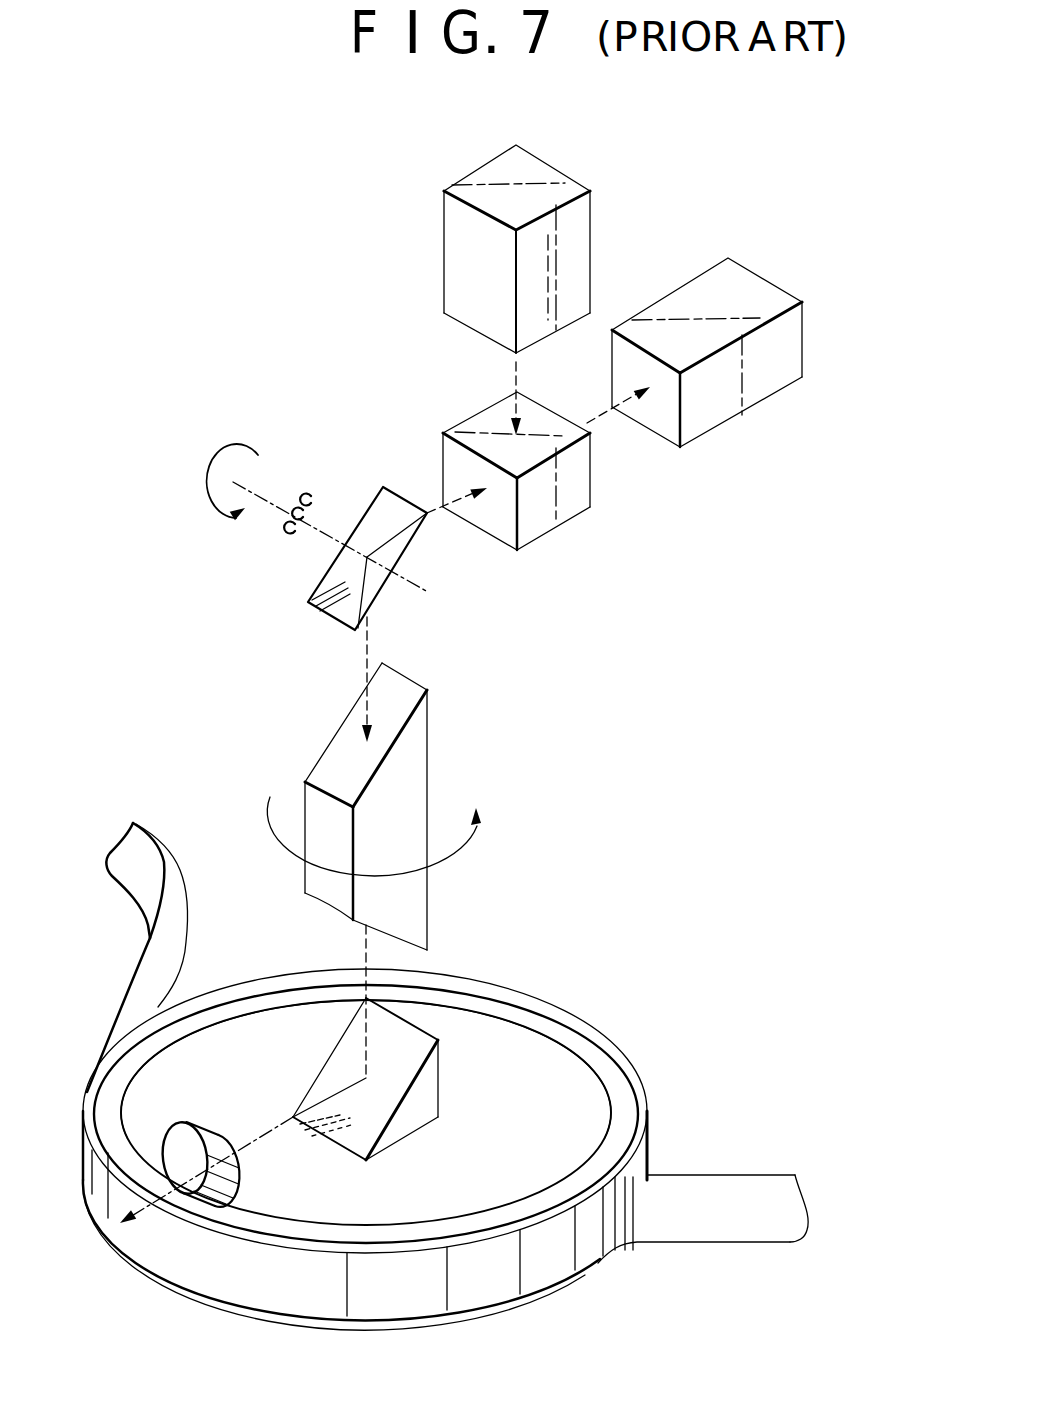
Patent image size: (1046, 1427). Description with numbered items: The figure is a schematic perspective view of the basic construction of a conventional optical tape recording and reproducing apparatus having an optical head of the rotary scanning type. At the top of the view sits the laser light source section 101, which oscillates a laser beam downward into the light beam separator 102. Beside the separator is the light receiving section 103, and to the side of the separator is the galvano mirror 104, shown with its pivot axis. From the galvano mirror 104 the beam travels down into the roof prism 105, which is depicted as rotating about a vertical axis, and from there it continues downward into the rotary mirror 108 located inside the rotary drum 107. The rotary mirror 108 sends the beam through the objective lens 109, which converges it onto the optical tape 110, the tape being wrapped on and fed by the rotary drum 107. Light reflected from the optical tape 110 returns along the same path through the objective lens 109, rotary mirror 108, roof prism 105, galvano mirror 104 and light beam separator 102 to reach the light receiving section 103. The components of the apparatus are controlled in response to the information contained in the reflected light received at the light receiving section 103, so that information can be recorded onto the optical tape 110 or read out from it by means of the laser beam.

The laser light source section 101 is at (577, 177).
The light beam separator 102 is at (563, 523).
The light receiving section 103 is at (748, 270).
The galvano mirror 104 is at (390, 485).
The roof prism 105 is at (422, 690).
The rotary drum 107 is at (632, 1052).
The rotary mirror 108 is at (402, 1138).
The objective lens 109 is at (235, 1112).
The optical tape 110 is at (690, 1173).